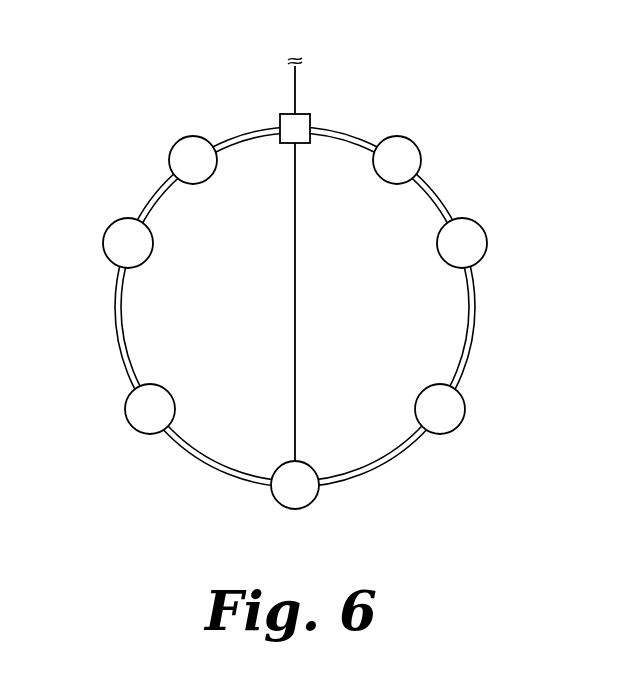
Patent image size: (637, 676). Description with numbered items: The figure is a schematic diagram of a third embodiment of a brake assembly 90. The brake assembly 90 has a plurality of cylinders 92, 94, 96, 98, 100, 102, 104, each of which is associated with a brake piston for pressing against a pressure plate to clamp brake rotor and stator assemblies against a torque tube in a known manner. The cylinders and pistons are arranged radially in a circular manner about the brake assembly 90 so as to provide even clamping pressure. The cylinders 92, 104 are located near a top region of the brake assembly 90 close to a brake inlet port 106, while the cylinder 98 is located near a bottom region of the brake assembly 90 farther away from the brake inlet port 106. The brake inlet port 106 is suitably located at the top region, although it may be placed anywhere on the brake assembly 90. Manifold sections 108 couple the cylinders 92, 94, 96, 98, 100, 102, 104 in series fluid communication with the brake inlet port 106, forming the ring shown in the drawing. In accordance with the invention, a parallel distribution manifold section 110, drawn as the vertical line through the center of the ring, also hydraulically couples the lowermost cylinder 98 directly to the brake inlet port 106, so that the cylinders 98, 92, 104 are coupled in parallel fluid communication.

The brake assembly 90 is at (471, 76).
The cylinder 92 is at (177, 142).
The cylinder 94 is at (110, 226).
The cylinder 96 is at (133, 427).
The cylinder 98 is at (313, 502).
The cylinder 100 is at (457, 427).
The cylinder 102 is at (480, 226).
The cylinder 104 is at (413, 142).
The brake inlet port 106 is at (311, 122).
The manifold sections 108 is at (240, 134).
The parallel distribution manifold section 110 is at (296, 268).